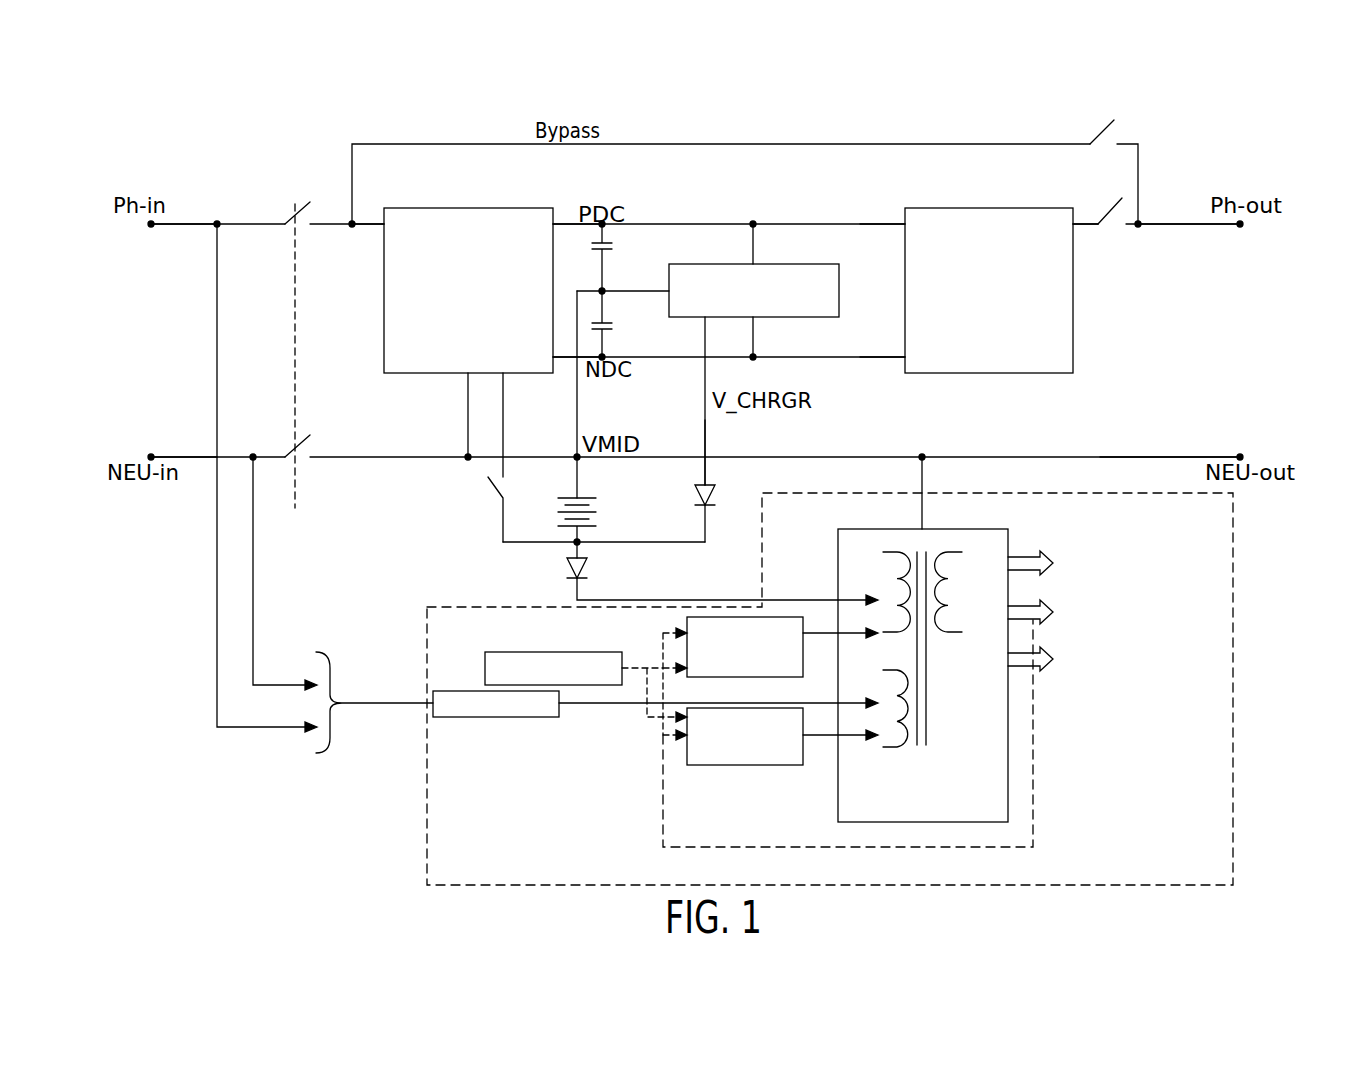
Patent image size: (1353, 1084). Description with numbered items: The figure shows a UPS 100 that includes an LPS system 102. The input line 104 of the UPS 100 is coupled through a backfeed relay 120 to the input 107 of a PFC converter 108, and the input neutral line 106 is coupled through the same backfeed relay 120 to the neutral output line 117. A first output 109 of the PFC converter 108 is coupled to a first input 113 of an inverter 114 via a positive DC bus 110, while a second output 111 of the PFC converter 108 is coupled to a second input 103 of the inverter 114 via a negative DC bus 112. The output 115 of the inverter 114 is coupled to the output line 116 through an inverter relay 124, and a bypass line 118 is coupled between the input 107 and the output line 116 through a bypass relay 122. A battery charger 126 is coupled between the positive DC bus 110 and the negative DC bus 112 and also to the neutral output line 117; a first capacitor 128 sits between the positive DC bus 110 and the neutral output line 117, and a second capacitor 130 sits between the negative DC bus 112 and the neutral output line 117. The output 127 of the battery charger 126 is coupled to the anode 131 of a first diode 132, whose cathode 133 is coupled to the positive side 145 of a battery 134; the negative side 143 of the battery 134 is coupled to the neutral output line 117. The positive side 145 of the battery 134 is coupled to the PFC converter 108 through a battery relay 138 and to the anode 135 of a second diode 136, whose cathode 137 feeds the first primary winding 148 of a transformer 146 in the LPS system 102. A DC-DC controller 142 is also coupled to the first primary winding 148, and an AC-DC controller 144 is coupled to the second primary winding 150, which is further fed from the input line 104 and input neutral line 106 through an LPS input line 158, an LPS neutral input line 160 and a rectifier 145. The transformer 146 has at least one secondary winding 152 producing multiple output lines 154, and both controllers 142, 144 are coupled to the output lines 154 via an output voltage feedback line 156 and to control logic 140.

The UPS 100 is at (200, 112).
The LPS system 102 is at (440, 815).
The second input of the inverter 103 is at (904, 360).
The input line 104 is at (178, 222).
The input neutral line 106 is at (173, 457).
The input of the PFC converter 107 is at (381, 221).
The PFC converter 108 is at (482, 218).
The first output of the PFC converter 109 is at (556, 222).
The positive DC bus 110 is at (655, 224).
The second output of the PFC converter 111 is at (556, 360).
The negative DC bus 112 is at (630, 357).
The first input of the inverter 113 is at (903, 222).
The inverter 114 is at (958, 218).
The output of the inverter 115 is at (1077, 228).
The output line 116 is at (1172, 222).
The neutral output line 117 is at (1180, 457).
The bypass line 118 is at (450, 143).
The backfeed relay 120 is at (297, 490).
The bypass relay 122 is at (1108, 123).
The inverter relay 124 is at (1112, 205).
The battery charger 126 is at (832, 283).
The output of the battery charger 127 is at (706, 318).
The first capacitor 128 is at (608, 248).
The second capacitor 130 is at (607, 324).
The anode of the first diode 131 is at (708, 485).
The first diode 132 is at (718, 500).
The cathode of the first diode 133 is at (708, 507).
The battery 134 is at (592, 510).
The anode of the second diode 135 is at (574, 553).
The second diode 136 is at (567, 568).
The cathode of the second diode 137 is at (570, 580).
The battery relay 138 is at (495, 492).
The control logic 140 is at (492, 652).
The DC-DC controller 142 is at (690, 625).
The negative side of the battery 143 is at (577, 497).
The AC-DC controller 144 is at (742, 766).
The rectifier 145 is at (597, 527).
The transformer 146 is at (857, 536).
The first primary winding 148 is at (885, 590).
The second primary winding 150 is at (895, 730).
The secondary winding 152 is at (960, 590).
The output lines 154 is at (1048, 557).
The output voltage feedback line 156 is at (1035, 780).
The LPS input line 158 is at (216, 618).
The LPS neutral input line 160 is at (254, 620).